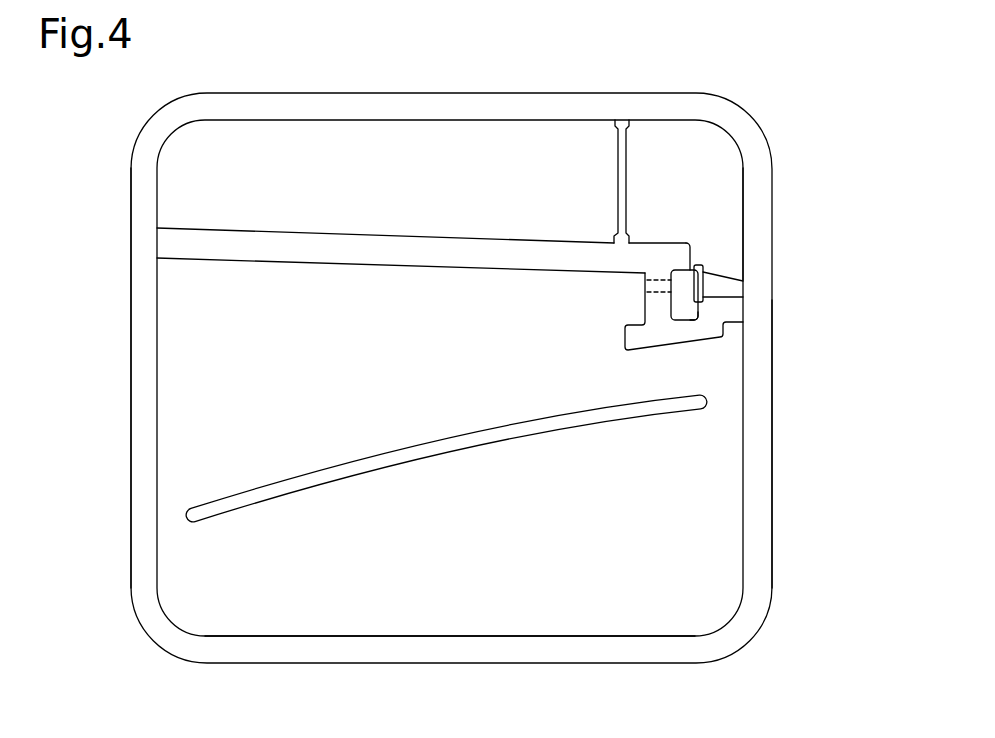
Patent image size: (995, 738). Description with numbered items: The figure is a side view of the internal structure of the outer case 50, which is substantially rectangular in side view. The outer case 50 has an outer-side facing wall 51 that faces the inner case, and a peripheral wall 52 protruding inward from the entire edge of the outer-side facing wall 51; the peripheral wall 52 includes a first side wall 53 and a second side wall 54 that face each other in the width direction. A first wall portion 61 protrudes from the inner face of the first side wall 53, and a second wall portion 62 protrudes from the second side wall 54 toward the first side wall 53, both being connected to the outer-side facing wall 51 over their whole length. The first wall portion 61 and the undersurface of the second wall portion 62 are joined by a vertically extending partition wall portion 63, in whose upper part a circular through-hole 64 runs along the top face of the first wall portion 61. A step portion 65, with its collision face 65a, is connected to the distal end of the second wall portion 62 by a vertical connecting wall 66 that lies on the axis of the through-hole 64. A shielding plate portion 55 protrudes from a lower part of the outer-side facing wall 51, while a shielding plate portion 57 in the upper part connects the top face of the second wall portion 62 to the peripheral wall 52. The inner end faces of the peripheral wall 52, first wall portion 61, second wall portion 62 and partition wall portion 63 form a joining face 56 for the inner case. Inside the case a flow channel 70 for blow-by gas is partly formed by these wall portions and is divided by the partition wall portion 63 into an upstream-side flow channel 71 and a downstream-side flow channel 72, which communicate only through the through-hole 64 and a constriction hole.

The outer case 50 is at (785, 103).
The outer-side facing wall 51 is at (438, 622).
The peripheral wall 52 is at (131, 408).
The first side wall 53 is at (743, 183).
The second side wall 54 is at (157, 288).
The shielding plate portion 55 is at (372, 476).
The joining face 56 is at (771, 468).
The shielding plate portion 57 is at (617, 152).
The first wall portion 61 is at (650, 348).
The second wall portion 62 is at (282, 234).
The partition wall portion 63 is at (633, 272).
The through-hole 64 is at (647, 288).
The step portion 65 is at (669, 307).
The collision face 65a is at (693, 313).
The connecting wall 66 is at (703, 272).
The flow channel 70 is at (186, 439).
The upstream-side flow channel 71 is at (731, 431).
The downstream-side flow channel 72 is at (175, 163).